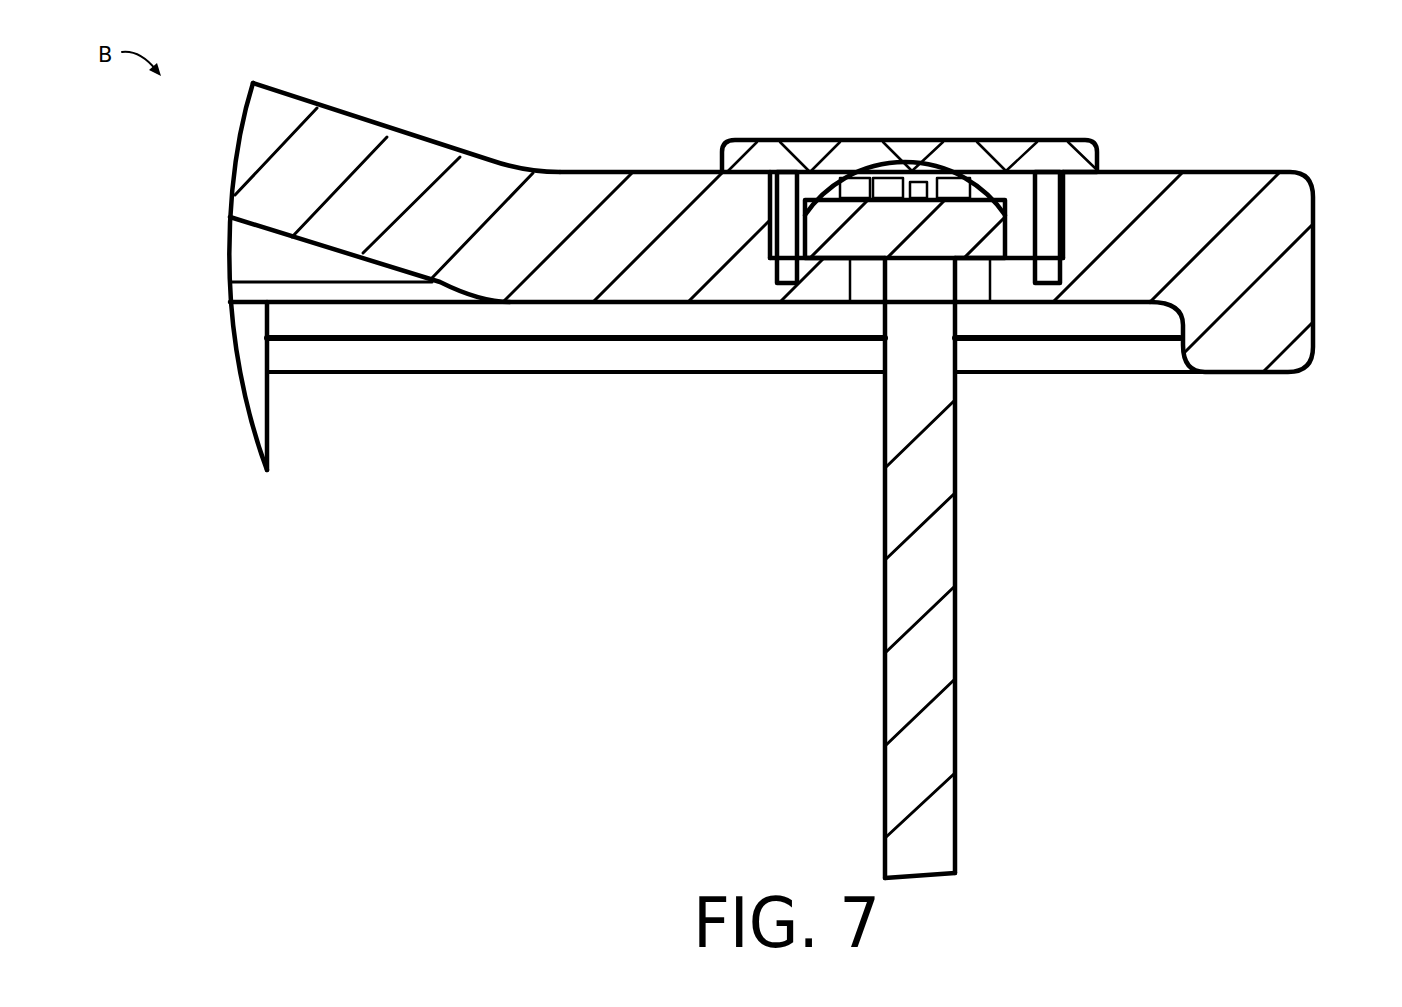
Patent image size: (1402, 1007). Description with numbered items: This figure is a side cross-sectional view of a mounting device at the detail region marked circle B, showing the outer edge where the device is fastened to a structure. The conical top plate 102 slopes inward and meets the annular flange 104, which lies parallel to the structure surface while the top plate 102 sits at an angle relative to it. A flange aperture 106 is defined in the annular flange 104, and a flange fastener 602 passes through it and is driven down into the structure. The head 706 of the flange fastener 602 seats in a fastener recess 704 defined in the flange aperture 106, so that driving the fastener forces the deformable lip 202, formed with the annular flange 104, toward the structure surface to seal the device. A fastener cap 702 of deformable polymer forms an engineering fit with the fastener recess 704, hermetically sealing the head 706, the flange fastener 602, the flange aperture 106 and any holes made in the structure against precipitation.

The top plate 102 is at (345, 130).
The annular flange 104 is at (640, 208).
The flange aperture 106 is at (911, 362).
The lip 202 is at (1240, 350).
The flange fastener 602 is at (932, 623).
The fastener cap 702 is at (1110, 140).
The fastener recess 704 is at (1014, 198).
The head 706 is at (845, 215).